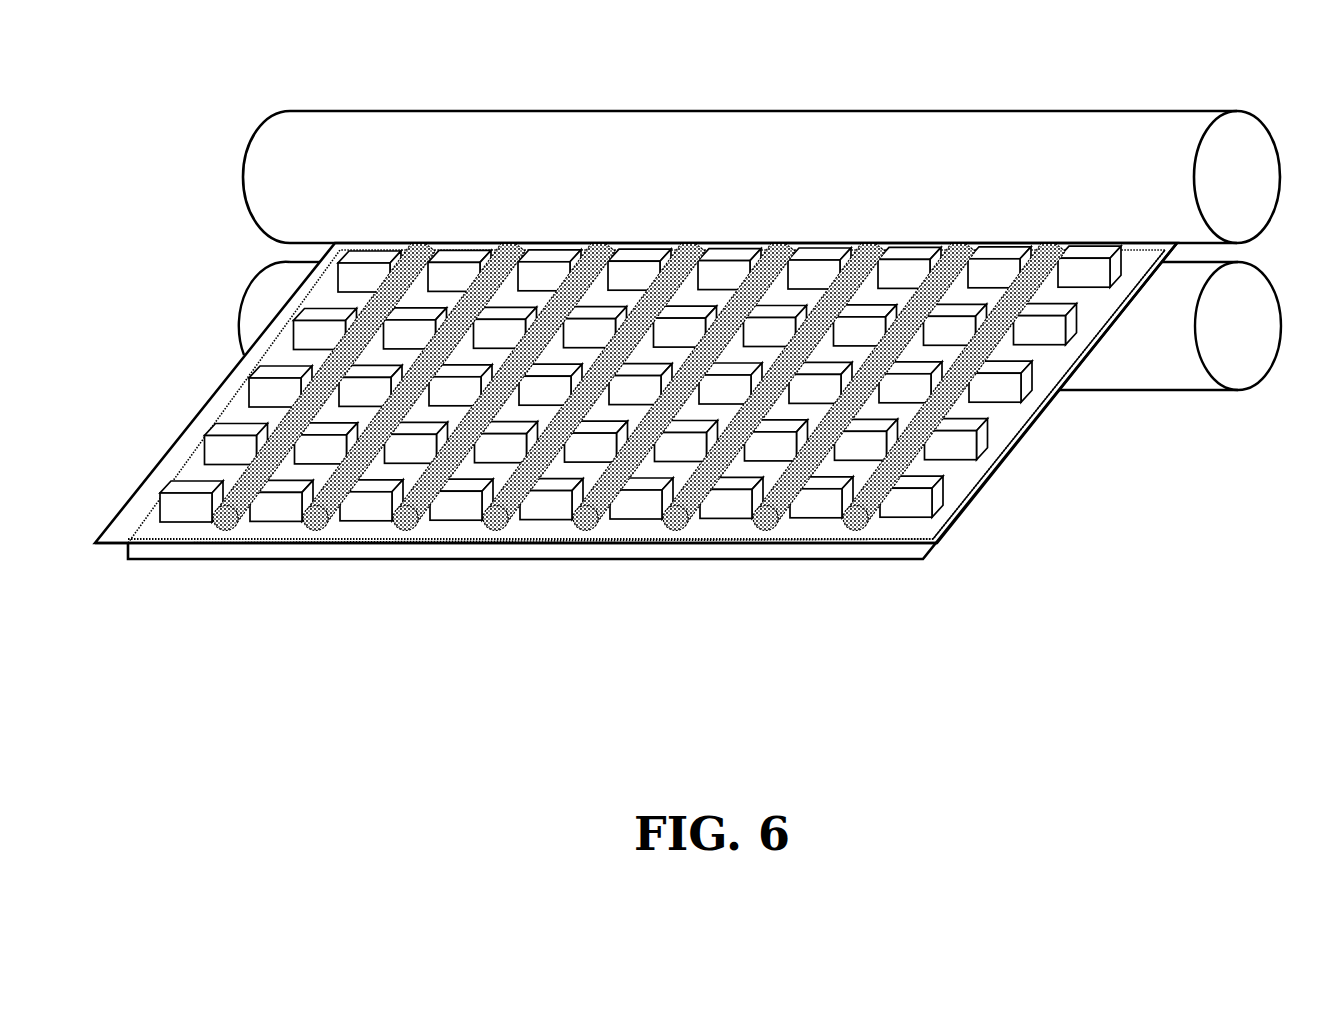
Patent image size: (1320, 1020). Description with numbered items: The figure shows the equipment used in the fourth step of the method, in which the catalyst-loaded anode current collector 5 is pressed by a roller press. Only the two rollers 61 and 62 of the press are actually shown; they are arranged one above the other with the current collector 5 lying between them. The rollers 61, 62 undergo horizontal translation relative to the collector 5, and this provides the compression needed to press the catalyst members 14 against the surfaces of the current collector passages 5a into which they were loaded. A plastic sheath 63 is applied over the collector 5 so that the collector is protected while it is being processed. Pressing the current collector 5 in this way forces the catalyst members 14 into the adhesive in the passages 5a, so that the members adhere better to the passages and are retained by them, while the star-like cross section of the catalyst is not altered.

The anode current collector 5 is at (883, 548).
The current collector passages 5a is at (863, 543).
The catalyst members 14 is at (825, 543).
The roller 61 is at (1055, 137).
The roller 62 is at (1158, 363).
The plastic sheath 63 is at (973, 493).